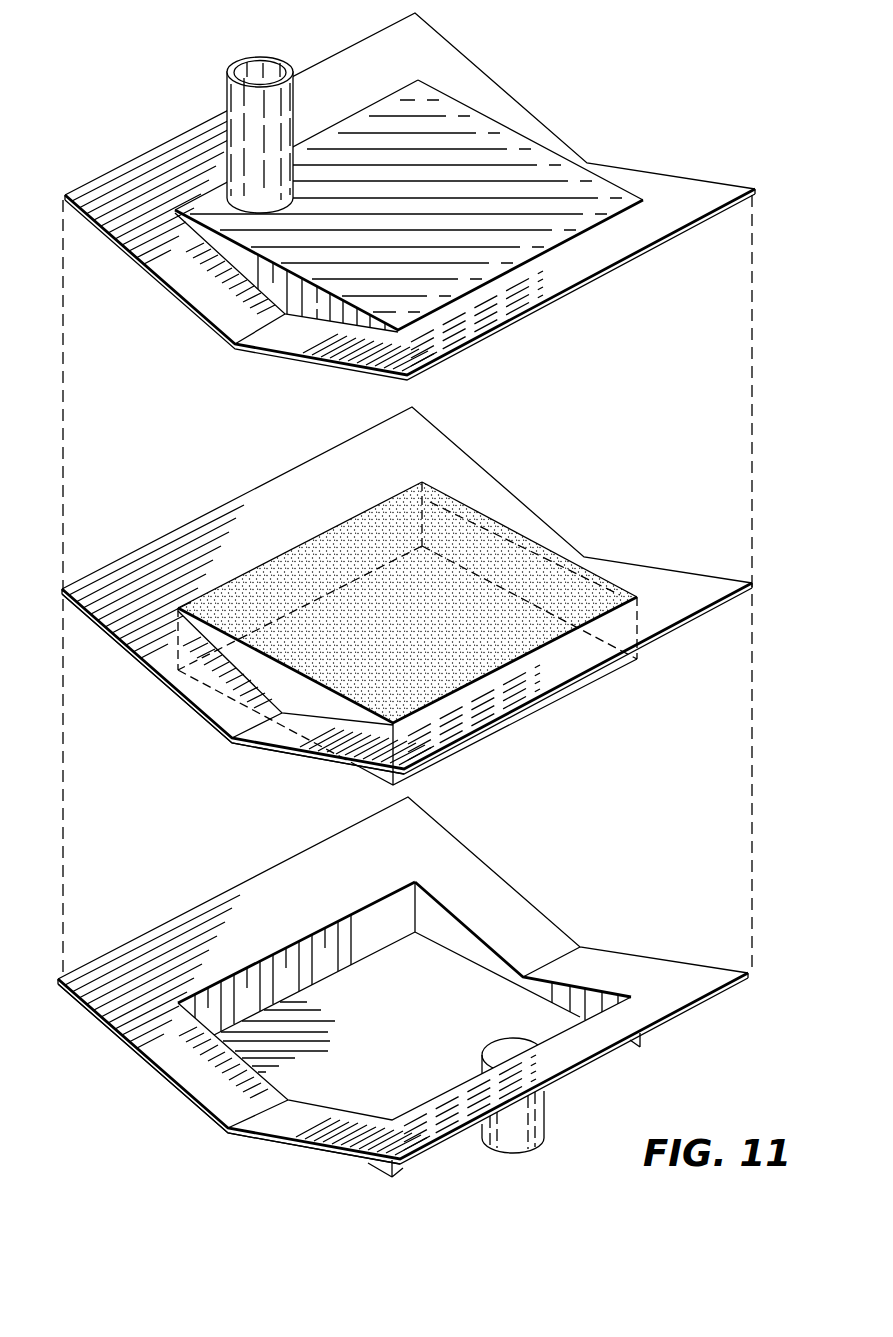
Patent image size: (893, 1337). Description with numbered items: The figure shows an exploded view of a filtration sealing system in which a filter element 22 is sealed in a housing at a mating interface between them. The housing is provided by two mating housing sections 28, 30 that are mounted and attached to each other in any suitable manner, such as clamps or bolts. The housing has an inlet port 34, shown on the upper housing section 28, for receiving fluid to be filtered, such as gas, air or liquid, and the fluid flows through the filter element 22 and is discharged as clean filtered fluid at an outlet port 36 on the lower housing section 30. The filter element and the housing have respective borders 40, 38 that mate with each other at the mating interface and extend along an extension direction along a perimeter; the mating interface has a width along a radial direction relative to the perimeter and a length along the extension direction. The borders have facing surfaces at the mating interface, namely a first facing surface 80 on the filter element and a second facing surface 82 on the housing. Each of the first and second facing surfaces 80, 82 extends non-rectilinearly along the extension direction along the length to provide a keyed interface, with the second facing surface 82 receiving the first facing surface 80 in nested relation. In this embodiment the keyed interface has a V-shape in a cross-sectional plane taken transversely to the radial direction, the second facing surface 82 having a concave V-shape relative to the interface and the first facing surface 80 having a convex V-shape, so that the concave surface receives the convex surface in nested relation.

The filter element 22 is at (527, 556).
The housing section 28 is at (577, 186).
The housing section 30 is at (487, 985).
The inlet port 34 is at (262, 70).
The outlet port 36 is at (512, 1156).
The housing border 38 is at (124, 1042).
The filter element border 40 is at (152, 674).
The first facing surface 80 is at (187, 706).
The second facing surface 82 is at (205, 1078).